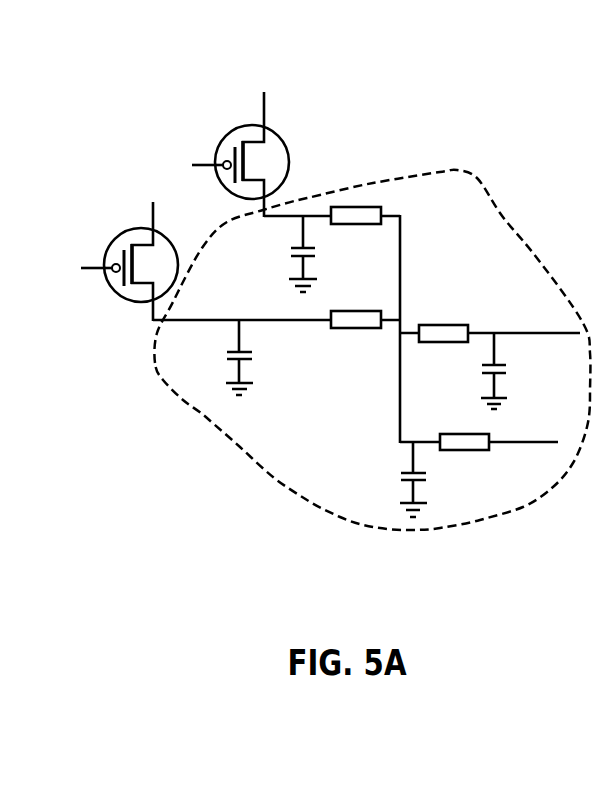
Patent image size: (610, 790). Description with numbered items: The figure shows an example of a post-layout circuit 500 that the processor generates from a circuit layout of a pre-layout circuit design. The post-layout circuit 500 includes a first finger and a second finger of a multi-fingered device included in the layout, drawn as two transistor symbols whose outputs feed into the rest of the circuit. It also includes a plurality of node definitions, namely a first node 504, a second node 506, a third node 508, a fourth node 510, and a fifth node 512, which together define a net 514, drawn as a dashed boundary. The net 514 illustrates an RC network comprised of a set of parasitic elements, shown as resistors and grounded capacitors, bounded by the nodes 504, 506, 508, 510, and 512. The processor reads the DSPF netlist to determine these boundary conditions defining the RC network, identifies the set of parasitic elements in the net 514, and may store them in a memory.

The post-layout circuit 500 is at (367, 85).
The node NODE1 504 is at (218, 324).
The node A2 506 is at (317, 249).
The node A3 508 is at (490, 367).
The node A4 510 is at (479, 475).
The node NODE1:1 512 is at (407, 217).
The net 514 is at (247, 450).